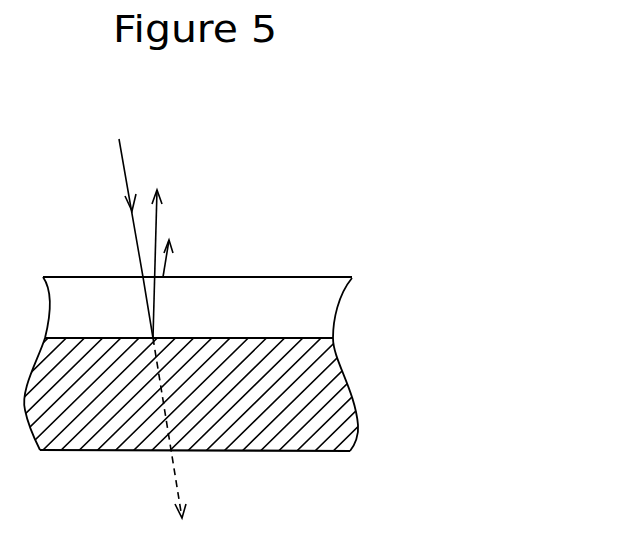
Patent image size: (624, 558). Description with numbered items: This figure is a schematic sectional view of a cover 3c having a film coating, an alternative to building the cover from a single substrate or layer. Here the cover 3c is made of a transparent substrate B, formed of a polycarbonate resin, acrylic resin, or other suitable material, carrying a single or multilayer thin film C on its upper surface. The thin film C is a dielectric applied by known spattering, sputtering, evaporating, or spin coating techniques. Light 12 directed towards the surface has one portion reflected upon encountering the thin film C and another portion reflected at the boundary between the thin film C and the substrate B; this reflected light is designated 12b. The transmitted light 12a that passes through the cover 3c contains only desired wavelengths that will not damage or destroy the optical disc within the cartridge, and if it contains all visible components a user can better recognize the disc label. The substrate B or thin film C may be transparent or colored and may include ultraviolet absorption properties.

The light 12 is at (125, 160).
The reflected light 12b is at (155, 217).
The transmitted light 12a is at (178, 478).
The thin film C is at (310, 302).
The transparent substrate B is at (327, 395).
The cover 3c is at (265, 364).